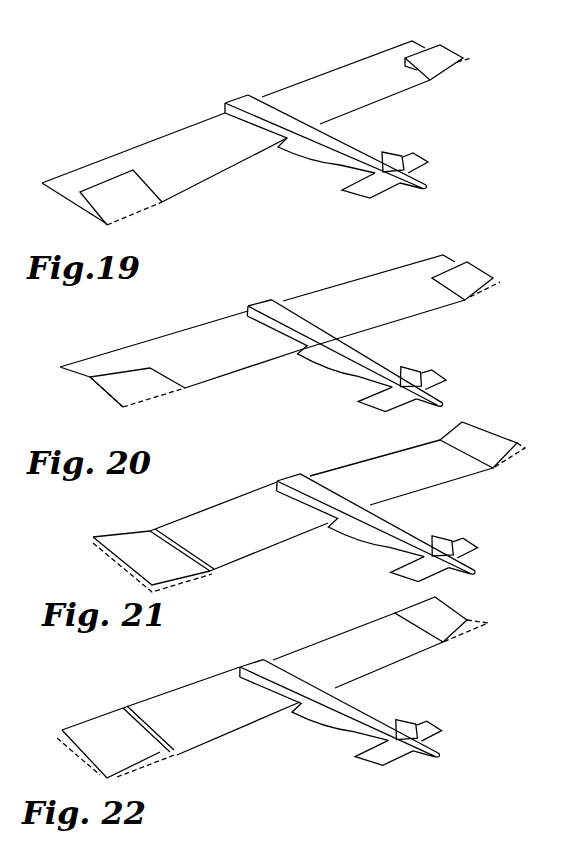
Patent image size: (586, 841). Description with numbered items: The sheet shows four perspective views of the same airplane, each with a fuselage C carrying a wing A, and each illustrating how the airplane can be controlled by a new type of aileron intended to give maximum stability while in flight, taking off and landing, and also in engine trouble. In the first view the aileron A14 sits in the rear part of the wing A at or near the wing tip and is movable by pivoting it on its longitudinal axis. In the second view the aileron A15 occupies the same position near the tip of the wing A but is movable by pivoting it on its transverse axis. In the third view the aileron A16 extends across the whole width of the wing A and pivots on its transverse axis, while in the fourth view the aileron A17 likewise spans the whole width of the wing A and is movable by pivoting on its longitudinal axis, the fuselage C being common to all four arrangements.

In FIG. 19, the wing A is at (172, 145).
In FIG. 20, the wing A is at (192, 336).
In FIG. 21, the wing A is at (233, 507).
In FIG. 22, the wing A is at (186, 702).
In FIG. 19, the fuselage C is at (236, 104).
In FIG. 20, the fuselage C is at (262, 305).
In FIG. 21, the fuselage C is at (297, 480).
In FIG. 22, the fuselage C is at (251, 662).
In FIG. 19, the aileron A14 is at (130, 203).
In FIG. 20, the aileron A15 is at (147, 390).
In FIG. 21, the aileron A16 is at (120, 539).
In FIG. 22, the aileron A17 is at (100, 727).